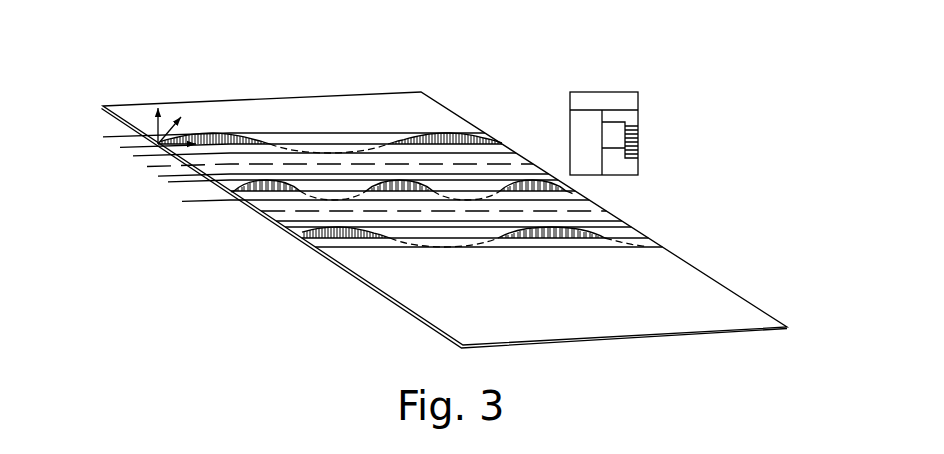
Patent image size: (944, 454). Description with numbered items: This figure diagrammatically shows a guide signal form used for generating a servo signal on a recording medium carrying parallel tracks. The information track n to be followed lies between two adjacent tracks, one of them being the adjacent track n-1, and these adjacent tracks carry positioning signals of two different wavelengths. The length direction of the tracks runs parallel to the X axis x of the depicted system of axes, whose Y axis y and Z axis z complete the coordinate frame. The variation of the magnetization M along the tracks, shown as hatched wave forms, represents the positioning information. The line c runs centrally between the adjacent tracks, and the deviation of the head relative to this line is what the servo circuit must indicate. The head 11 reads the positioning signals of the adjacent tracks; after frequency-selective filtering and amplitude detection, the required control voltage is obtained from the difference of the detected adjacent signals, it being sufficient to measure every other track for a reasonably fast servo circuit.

The head 11 is at (575, 125).
The magnetization M is at (450, 136).
The line centrally between the adjacent tracks c is at (519, 166).
The adjacent track n-1 is at (287, 103).
The information track to be followed n is at (313, 139).
The X axis x is at (178, 138).
The Y axis y is at (175, 118).
The Z axis z is at (157, 120).